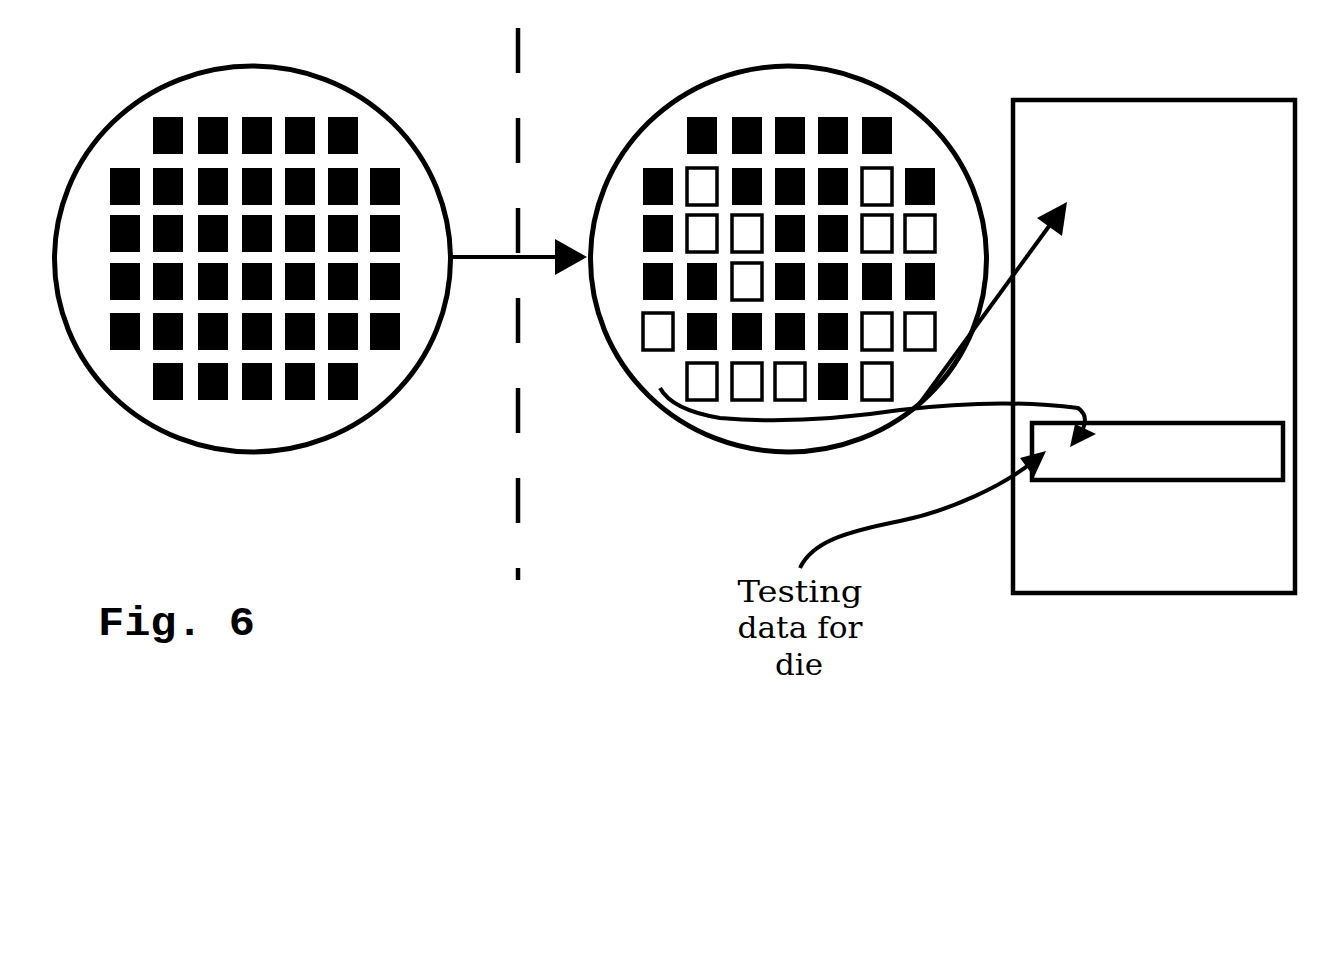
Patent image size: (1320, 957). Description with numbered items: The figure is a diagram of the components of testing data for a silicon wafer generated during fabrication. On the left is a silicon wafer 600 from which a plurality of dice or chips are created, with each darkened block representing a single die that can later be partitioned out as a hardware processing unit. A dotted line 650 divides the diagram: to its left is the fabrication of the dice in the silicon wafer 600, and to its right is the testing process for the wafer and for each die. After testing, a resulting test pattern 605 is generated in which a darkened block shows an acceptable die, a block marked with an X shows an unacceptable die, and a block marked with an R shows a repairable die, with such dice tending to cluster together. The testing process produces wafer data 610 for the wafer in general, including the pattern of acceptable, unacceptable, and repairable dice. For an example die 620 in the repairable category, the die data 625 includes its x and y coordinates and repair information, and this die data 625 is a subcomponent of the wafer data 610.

The silicon wafer 600 is at (243, 82).
The test pattern 605 is at (787, 248).
The wafer data 610 is at (1182, 118).
The die 620 is at (675, 381).
The die data 625 is at (1157, 451).
The dotted line 650 is at (508, 511).